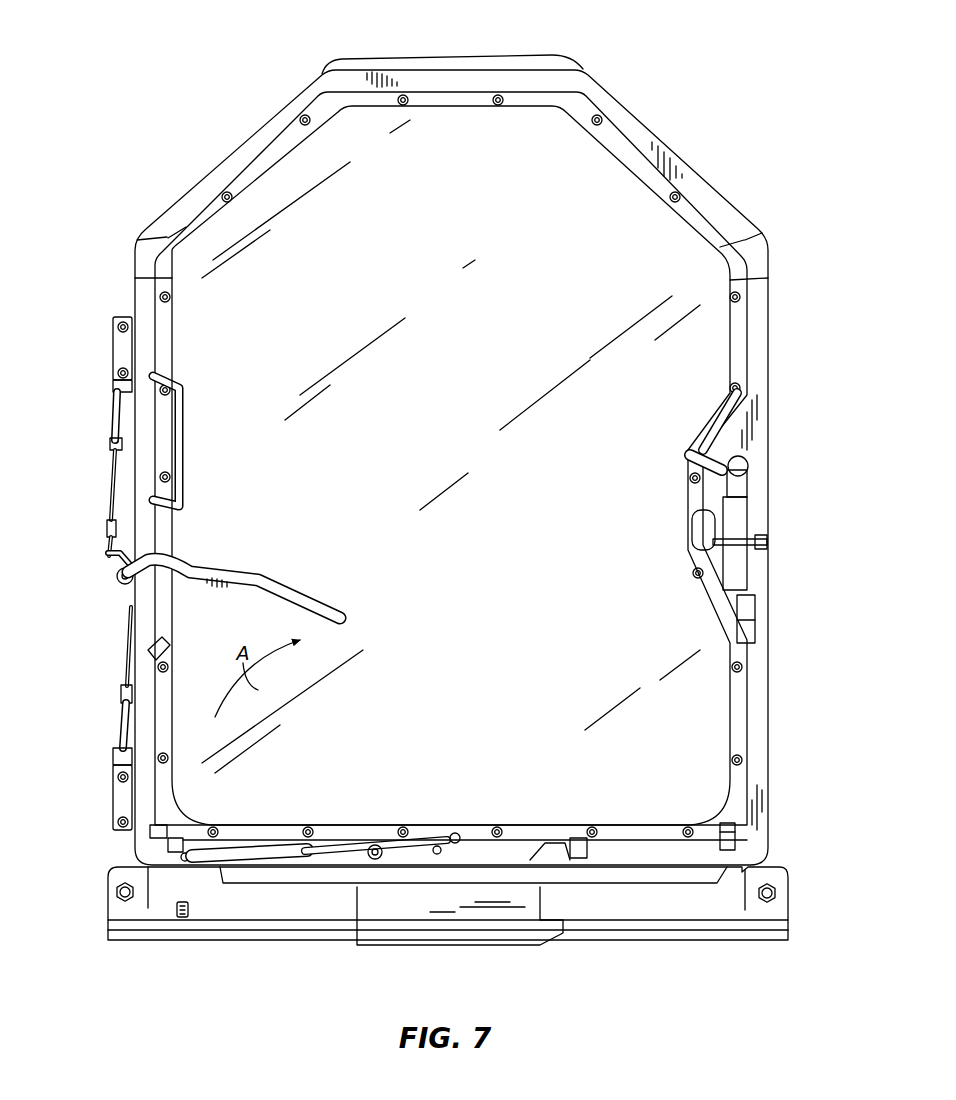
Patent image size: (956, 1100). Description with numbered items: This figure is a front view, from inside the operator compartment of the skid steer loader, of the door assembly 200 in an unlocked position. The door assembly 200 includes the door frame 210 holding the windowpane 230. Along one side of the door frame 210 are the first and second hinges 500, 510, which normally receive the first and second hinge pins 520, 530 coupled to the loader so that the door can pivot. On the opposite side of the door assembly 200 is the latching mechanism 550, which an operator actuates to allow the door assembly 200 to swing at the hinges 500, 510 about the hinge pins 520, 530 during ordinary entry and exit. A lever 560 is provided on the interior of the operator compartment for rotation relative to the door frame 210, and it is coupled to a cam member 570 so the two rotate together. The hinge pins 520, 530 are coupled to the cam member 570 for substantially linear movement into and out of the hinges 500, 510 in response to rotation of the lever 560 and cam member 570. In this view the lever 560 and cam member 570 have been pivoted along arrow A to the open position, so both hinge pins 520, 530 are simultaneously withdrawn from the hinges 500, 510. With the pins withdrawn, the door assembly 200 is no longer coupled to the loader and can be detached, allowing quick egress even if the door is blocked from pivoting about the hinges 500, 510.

The door assembly 200 is at (223, 84).
The door frame 210 is at (607, 100).
The windowpane 230 is at (635, 237).
The first hinge 500 is at (122, 347).
The second hinge 510 is at (123, 802).
The first hinge pin 520 is at (117, 397).
The second hinge pin 530 is at (118, 738).
The latching mechanism 550 is at (786, 505).
The lever 560 is at (320, 610).
The cam member 570 is at (112, 570).